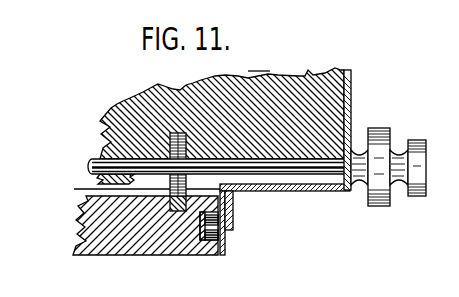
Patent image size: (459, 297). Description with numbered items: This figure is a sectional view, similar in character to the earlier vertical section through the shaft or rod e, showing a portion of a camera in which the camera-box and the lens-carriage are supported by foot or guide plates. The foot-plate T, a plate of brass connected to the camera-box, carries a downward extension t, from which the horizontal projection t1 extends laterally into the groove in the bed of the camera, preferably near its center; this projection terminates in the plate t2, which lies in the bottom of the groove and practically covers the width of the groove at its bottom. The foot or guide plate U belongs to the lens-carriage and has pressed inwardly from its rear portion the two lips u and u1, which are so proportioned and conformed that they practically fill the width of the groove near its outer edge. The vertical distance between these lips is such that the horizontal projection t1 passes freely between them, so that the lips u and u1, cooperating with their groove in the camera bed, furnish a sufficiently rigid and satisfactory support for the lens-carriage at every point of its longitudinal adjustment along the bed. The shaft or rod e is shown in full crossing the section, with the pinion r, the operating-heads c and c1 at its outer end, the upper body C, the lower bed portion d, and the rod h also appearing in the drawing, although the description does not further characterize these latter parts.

The frame block C is at (302, 67).
The shaft or rod e is at (88, 152).
The rod h is at (136, 179).
The base block d is at (130, 240).
The gear r is at (176, 205).
The plate t2 is at (195, 233).
The lip u is at (219, 216).
The lip u1 is at (207, 233).
The downward extension t is at (285, 198).
The foot or guide plate U is at (226, 190).
The horizontal projection t1 is at (220, 221).
The foot-plate T is at (330, 183).
The collar c1 is at (386, 203).
The collar c is at (430, 156).